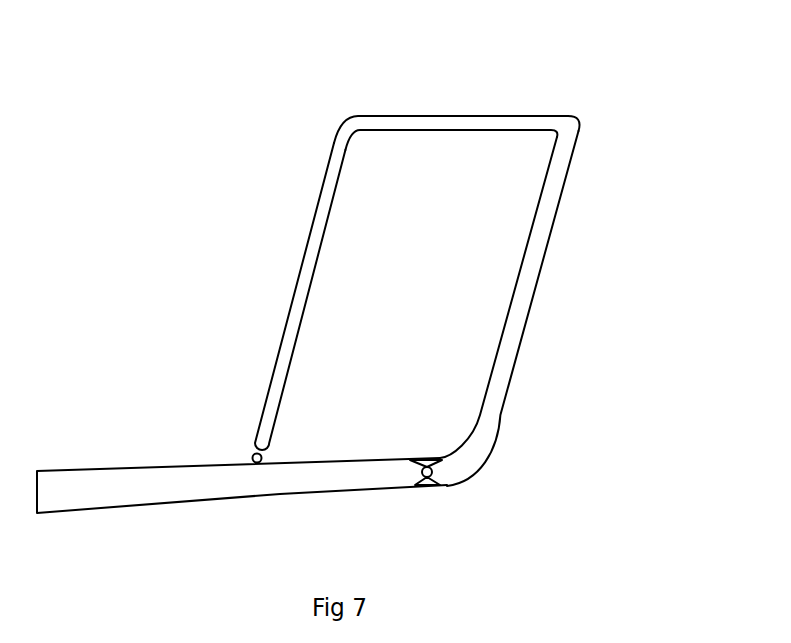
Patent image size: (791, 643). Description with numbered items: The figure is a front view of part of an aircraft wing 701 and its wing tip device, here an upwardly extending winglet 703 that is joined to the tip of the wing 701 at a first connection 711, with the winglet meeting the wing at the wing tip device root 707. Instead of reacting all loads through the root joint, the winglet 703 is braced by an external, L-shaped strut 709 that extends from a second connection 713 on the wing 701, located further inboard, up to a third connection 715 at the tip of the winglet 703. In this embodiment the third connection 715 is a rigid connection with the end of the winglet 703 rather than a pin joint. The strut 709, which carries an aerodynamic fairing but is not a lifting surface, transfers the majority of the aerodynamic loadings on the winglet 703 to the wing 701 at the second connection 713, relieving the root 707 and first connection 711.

The wing 701 is at (92, 470).
The winglet 703 is at (544, 258).
The wing tip device root 707 is at (462, 465).
The strut 709 is at (303, 255).
The first connection 711 is at (430, 487).
The second connection 713 is at (253, 455).
The third connection 715 is at (572, 120).